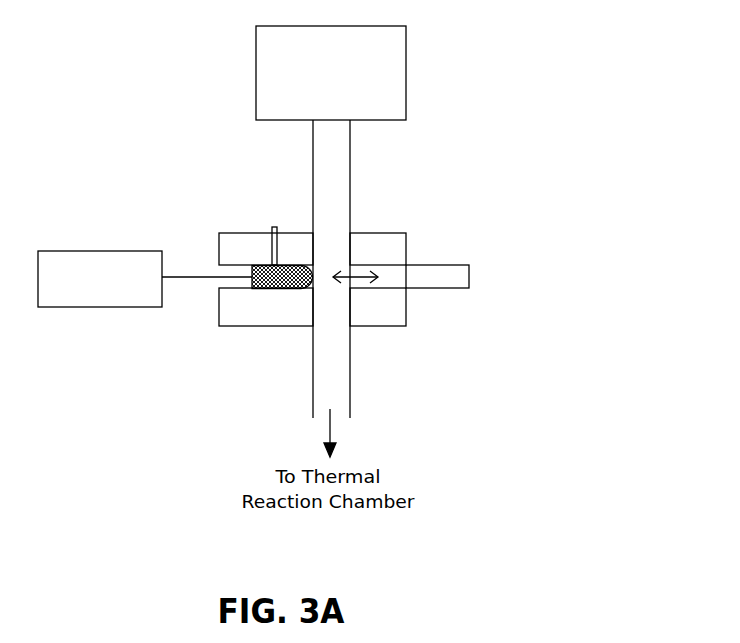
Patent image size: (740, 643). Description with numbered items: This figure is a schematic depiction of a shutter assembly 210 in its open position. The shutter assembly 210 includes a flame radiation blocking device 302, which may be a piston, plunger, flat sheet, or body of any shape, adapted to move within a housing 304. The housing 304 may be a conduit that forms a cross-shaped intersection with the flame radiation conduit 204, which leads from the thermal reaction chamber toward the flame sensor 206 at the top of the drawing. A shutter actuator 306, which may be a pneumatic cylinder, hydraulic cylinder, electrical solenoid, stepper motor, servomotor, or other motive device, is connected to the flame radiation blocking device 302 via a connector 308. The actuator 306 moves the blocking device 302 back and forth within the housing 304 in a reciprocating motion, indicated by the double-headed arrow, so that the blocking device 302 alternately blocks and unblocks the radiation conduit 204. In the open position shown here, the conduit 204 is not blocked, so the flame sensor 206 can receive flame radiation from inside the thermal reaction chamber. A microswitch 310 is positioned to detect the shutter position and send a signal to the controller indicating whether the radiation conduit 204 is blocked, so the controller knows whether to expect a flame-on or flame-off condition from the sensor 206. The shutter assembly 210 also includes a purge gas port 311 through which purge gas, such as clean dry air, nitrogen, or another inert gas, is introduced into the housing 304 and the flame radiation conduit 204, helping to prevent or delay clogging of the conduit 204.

The flame radiation conduit 204 is at (350, 377).
The flame sensor 206 is at (406, 86).
The shutter assembly 210 is at (557, 205).
The flame radiation blocking device 302 is at (252, 268).
The housing 304 is at (374, 233).
The shutter actuator 306 is at (95, 308).
The connector 308 is at (198, 278).
The microswitch 310 is at (270, 243).
The purge gas port 311 is at (438, 288).